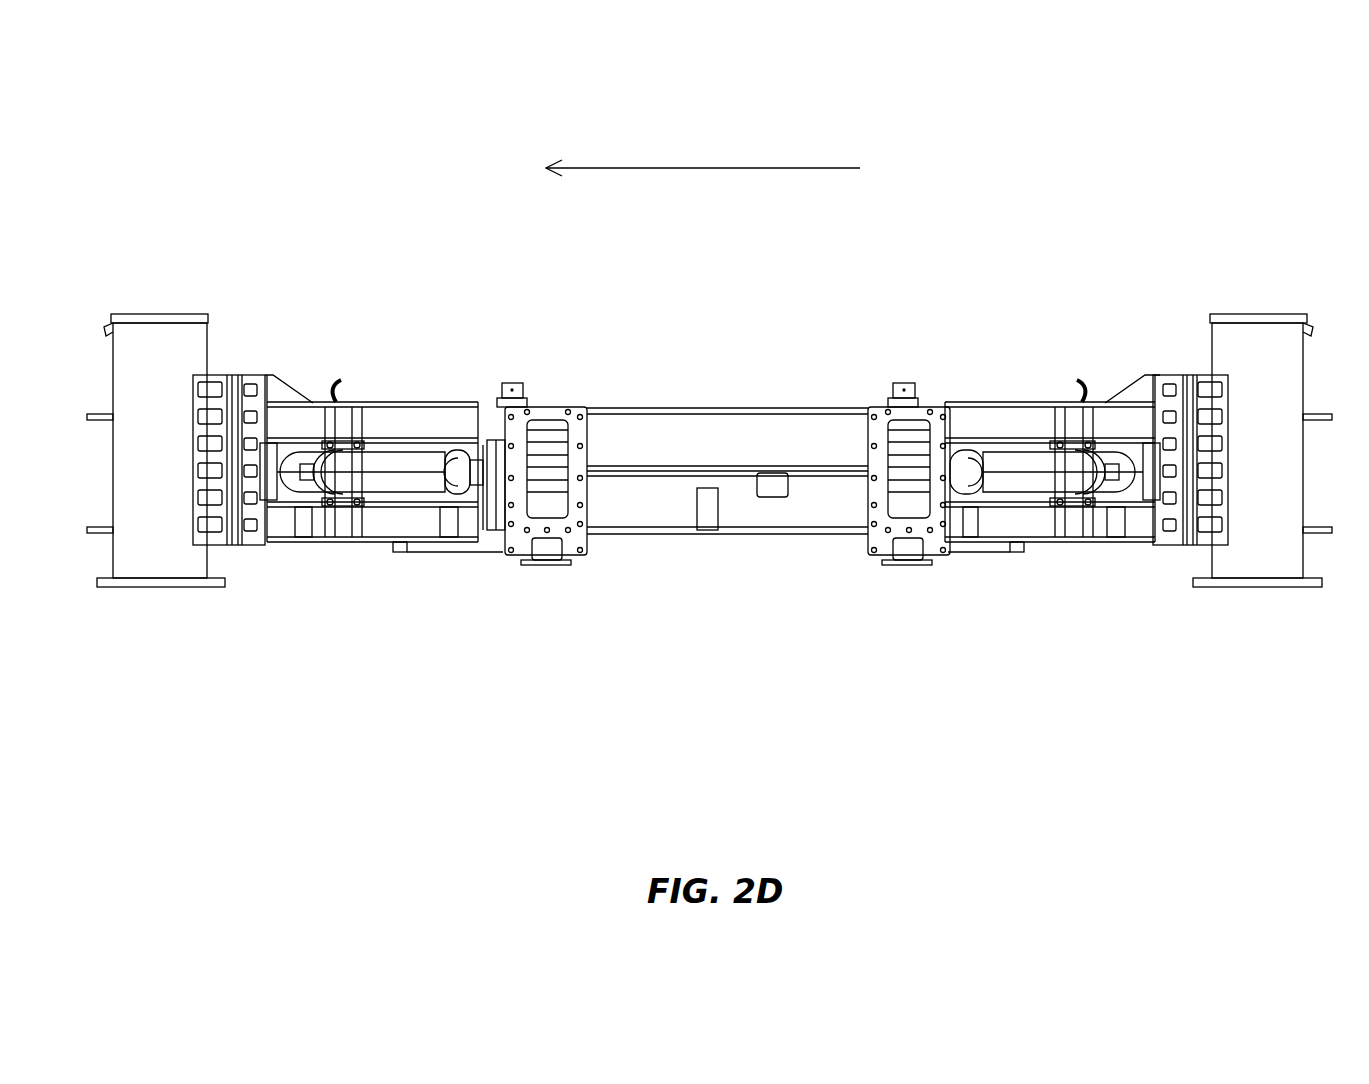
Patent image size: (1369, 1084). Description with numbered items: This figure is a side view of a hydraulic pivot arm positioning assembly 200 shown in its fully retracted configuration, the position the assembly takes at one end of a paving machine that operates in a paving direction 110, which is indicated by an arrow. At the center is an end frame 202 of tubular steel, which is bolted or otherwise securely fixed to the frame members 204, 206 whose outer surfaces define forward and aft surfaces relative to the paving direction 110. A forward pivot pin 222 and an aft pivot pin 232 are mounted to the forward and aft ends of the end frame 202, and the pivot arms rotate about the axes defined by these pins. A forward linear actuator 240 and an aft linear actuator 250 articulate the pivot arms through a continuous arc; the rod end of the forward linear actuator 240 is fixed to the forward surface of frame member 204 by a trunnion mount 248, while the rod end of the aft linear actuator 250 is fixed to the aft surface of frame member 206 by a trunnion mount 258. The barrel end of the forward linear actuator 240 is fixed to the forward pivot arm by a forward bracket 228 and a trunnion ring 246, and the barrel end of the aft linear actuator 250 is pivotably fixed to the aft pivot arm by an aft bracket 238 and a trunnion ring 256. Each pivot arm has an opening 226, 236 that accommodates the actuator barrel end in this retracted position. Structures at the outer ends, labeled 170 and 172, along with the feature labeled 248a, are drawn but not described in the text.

The hydraulic pivot arm positioning assembly 200 is at (1157, 168).
The paving direction 110 is at (712, 168).
The left support column 170 is at (175, 317).
The right support column 172 is at (1258, 317).
The end frame 202 is at (736, 410).
The frame member 204 is at (545, 413).
The frame member 206 is at (883, 410).
The forward pivot pin 222 is at (512, 385).
The aft pivot pin 232 is at (900, 395).
The opening 226 is at (277, 455).
The opening 236 is at (1142, 462).
The forward bracket 228 is at (342, 413).
The aft bracket 238 is at (1078, 418).
The forward linear actuator 240 is at (380, 460).
The trunnion ring 256 is at (1072, 462).
The trunnion ring 246 is at (333, 493).
The trunnion mount 248 is at (478, 505).
The pivot link plate 248a is at (497, 478).
The aft linear actuator 250 is at (1023, 478).
The trunnion mount 258 is at (955, 482).